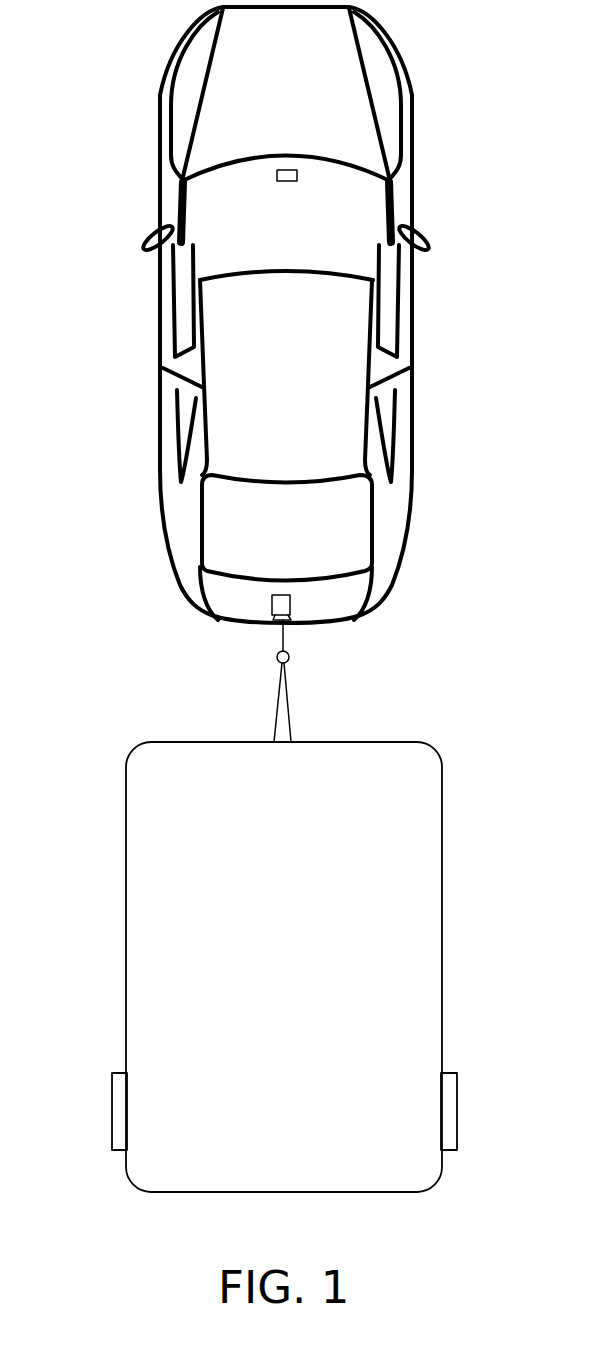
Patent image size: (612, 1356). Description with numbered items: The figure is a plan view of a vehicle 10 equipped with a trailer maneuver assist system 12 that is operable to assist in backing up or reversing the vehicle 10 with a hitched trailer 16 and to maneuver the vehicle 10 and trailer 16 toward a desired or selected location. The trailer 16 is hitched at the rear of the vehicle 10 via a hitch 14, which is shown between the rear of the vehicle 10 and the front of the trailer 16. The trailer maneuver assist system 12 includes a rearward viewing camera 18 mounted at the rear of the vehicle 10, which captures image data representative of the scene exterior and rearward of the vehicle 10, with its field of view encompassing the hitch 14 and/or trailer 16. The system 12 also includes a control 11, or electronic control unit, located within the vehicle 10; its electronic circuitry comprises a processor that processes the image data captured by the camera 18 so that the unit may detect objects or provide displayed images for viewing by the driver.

The vehicle 10 is at (432, 94).
The control 11 is at (297, 176).
The trailer maneuver assist system 12 is at (112, 580).
The hitch 14 is at (290, 660).
The trailer 16 is at (150, 770).
The rearward viewing camera 18 is at (291, 608).